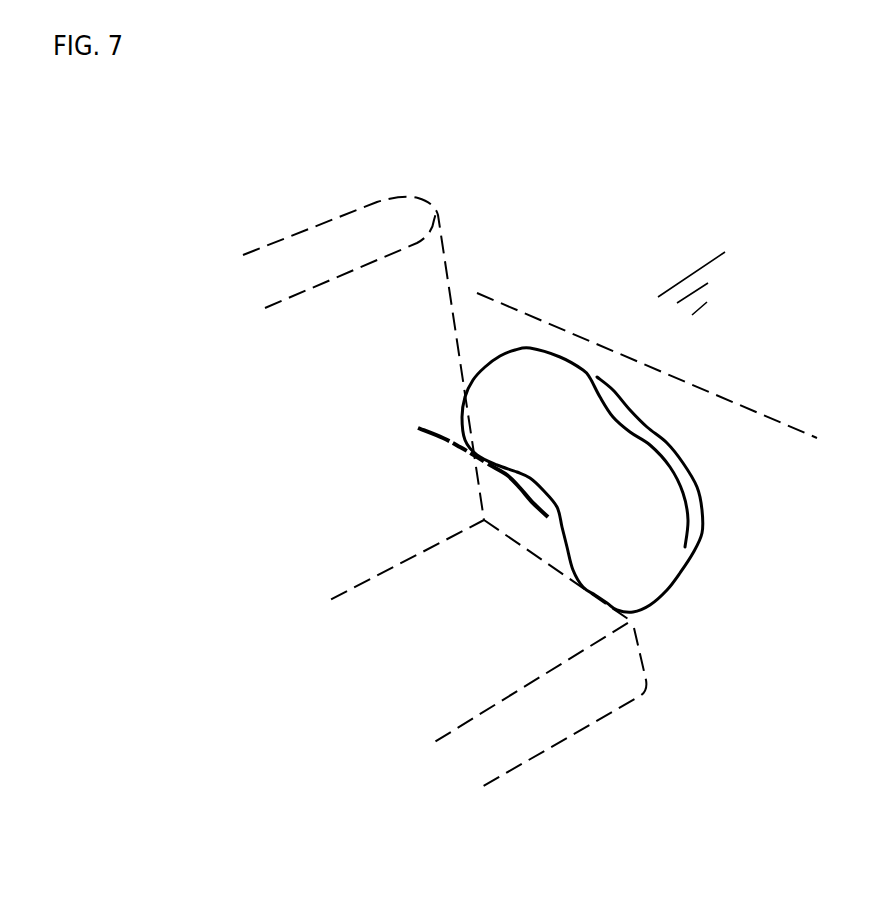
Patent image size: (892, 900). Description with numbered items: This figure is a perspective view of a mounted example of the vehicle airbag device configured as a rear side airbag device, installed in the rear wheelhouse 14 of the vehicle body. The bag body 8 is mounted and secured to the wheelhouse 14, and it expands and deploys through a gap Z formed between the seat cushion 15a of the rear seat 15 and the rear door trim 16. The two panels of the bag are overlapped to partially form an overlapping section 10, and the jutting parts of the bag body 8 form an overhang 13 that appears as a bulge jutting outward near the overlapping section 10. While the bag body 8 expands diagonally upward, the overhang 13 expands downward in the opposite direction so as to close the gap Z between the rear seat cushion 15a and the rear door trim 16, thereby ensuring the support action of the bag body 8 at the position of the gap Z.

The bag body 8 is at (713, 518).
The overlapping section 10 is at (520, 477).
The overhang 13 is at (587, 585).
The rear wheelhouse 14 is at (490, 467).
The rear seat 15 is at (342, 212).
The seat cushion 15a is at (508, 753).
The rear door trim 16 is at (745, 452).
The gap Z is at (657, 625).